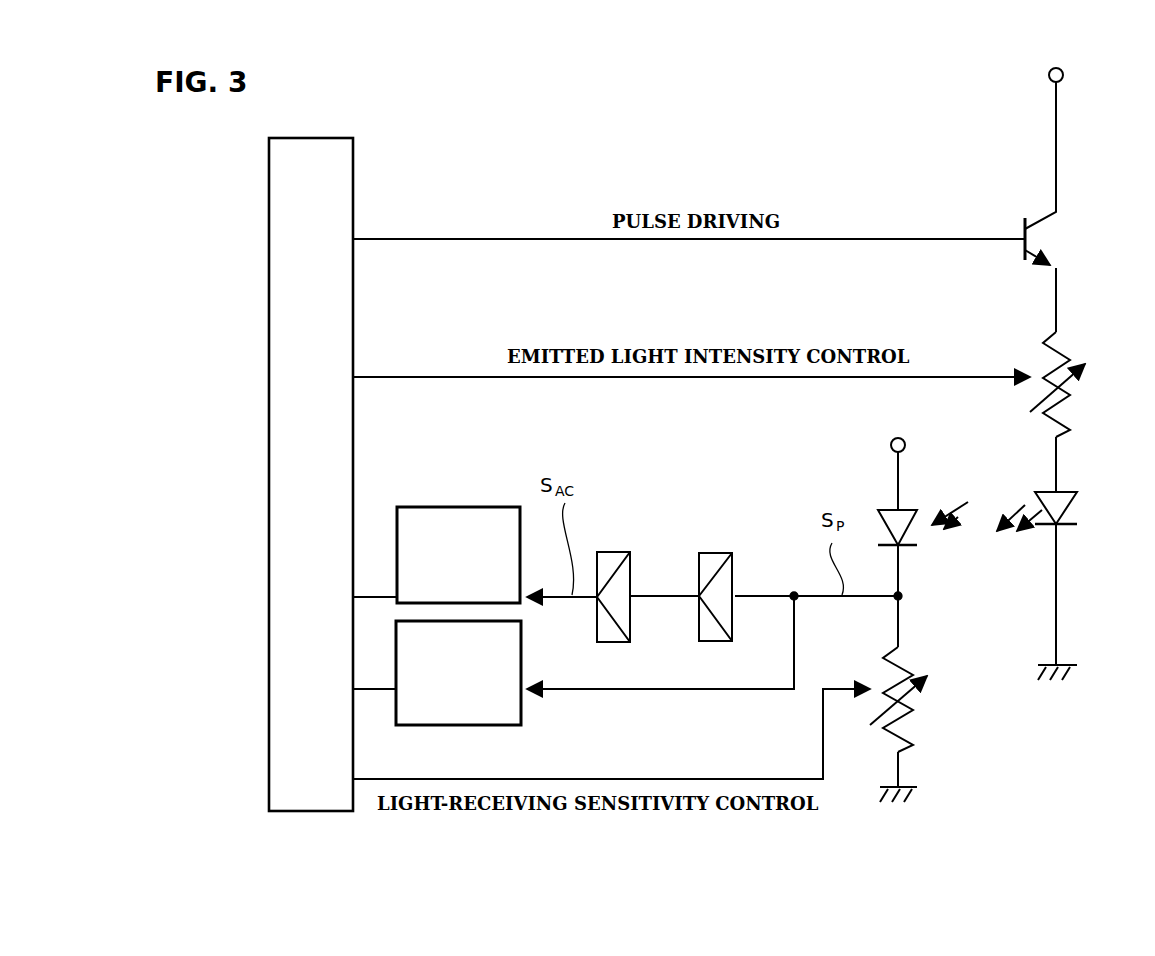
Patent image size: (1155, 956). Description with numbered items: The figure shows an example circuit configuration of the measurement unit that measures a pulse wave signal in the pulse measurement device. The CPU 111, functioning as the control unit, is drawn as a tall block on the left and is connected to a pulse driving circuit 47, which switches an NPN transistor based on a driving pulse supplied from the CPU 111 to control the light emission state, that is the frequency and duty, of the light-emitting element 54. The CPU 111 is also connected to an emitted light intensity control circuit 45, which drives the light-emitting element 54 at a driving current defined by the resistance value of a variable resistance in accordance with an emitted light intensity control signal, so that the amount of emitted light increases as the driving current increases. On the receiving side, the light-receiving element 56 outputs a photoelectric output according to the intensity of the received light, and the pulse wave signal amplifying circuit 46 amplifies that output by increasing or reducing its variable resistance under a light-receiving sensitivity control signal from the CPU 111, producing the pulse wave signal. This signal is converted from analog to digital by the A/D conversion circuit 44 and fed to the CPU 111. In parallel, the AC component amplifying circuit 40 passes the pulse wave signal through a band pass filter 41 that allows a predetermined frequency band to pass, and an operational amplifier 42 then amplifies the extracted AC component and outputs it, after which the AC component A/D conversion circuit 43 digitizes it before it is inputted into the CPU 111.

The CPU 111 is at (338, 137).
The pulse driving circuit 47 is at (1020, 222).
The emitted light intensity control circuit 45 is at (1066, 352).
The light-emitting element 54 is at (1070, 510).
The light-receiving element 56 is at (910, 503).
The pulse wave signal amplifying circuit 46 is at (907, 663).
The AC component amplifying circuit 40 is at (678, 562).
The operational amplifier 42 is at (633, 577).
The band pass filter 41 is at (740, 582).
The AC component A/D conversion circuit 43 is at (482, 472).
The A/D conversion circuit 44 is at (485, 725).